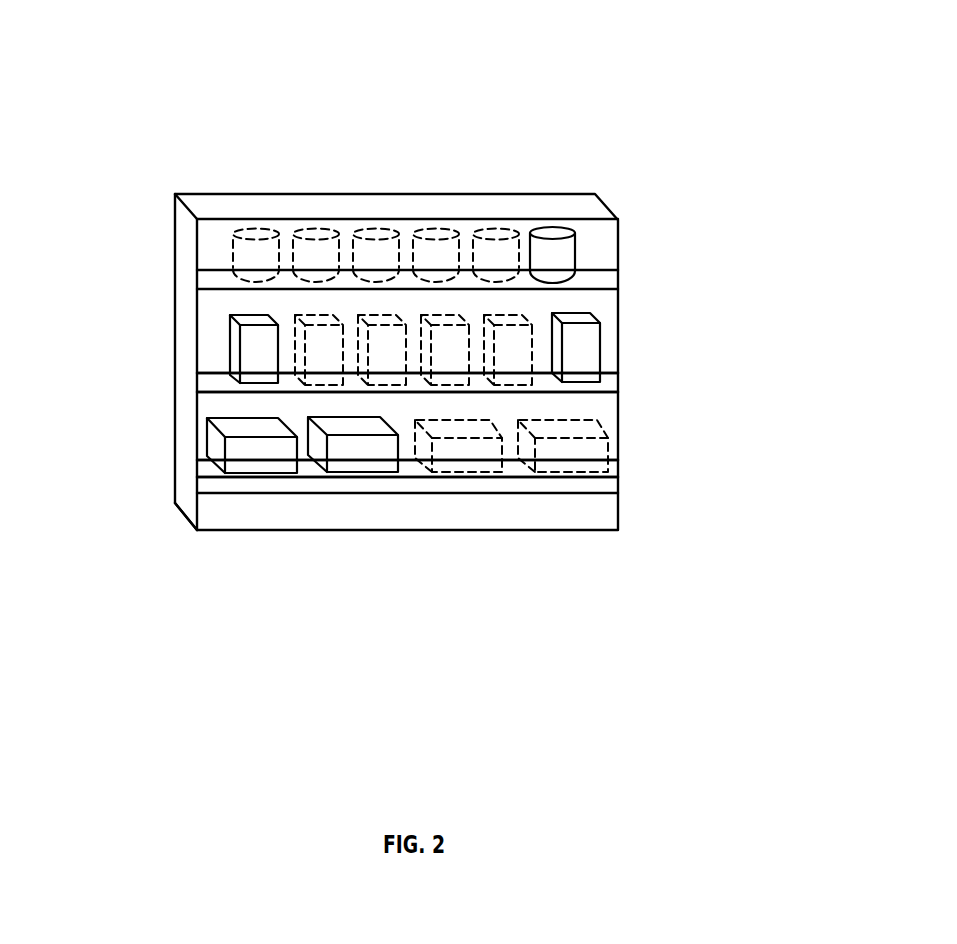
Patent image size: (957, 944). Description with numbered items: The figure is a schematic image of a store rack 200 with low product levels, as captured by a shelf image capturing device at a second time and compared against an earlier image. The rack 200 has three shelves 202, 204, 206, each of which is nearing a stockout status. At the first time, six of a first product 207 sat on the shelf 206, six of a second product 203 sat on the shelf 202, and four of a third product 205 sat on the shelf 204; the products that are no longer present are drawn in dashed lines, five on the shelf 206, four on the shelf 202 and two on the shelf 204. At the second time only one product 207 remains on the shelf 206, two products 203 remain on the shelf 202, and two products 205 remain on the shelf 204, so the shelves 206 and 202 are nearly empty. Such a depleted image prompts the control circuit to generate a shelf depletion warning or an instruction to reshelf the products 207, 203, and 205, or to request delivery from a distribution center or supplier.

The rack 200 is at (882, 104).
The shelf 202 is at (605, 373).
The products 203 is at (276, 368).
The shelf 204 is at (602, 470).
The products 205 is at (276, 466).
The shelf 206 is at (597, 270).
The product 207 is at (570, 262).